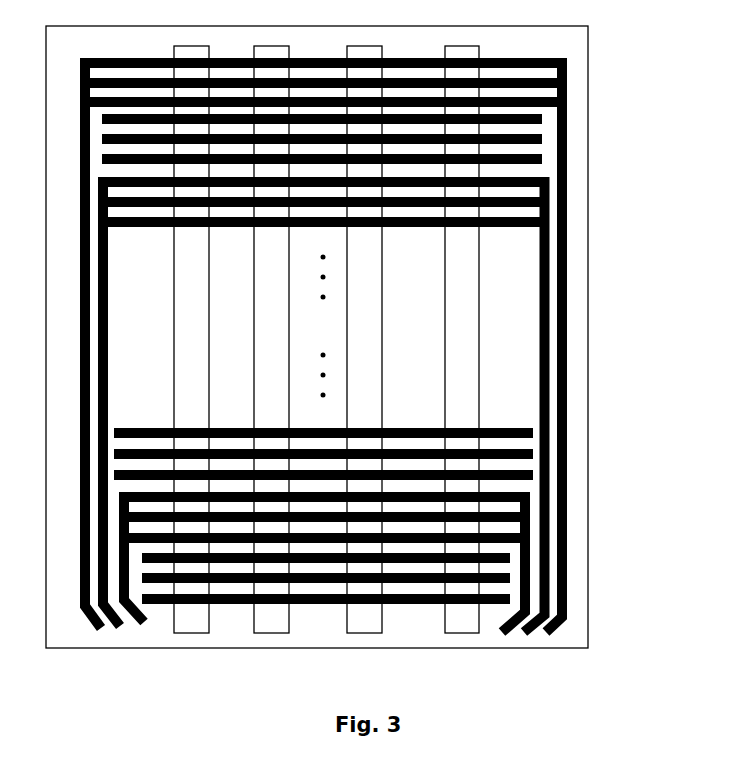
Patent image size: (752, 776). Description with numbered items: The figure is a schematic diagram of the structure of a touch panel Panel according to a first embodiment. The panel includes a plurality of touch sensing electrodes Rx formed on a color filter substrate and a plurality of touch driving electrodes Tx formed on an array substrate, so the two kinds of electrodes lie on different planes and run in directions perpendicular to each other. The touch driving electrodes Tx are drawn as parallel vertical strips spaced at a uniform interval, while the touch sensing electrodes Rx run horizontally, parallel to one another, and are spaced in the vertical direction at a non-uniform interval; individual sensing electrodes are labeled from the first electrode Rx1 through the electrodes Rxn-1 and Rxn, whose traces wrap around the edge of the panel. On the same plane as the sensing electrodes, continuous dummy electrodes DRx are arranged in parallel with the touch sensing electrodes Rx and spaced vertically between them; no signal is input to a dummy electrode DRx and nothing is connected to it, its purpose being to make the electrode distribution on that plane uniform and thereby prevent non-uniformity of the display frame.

The touch panel Panel is at (317, 337).
The touch driving electrodes Tx is at (363, 633).
The touch sensing electrodes Rx is at (532, 103).
The dummy electrodes DRx is at (512, 166).
The touch sensing electrode Rxn is at (557, 630).
The touch sensing electrode Rxn-1 is at (525, 632).
The touch sensing electrode Rx1 is at (502, 632).